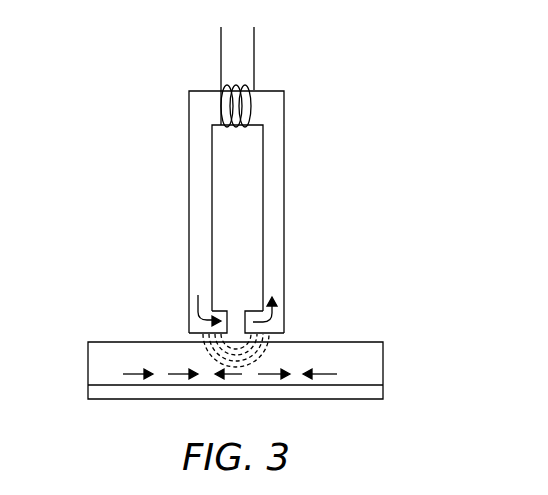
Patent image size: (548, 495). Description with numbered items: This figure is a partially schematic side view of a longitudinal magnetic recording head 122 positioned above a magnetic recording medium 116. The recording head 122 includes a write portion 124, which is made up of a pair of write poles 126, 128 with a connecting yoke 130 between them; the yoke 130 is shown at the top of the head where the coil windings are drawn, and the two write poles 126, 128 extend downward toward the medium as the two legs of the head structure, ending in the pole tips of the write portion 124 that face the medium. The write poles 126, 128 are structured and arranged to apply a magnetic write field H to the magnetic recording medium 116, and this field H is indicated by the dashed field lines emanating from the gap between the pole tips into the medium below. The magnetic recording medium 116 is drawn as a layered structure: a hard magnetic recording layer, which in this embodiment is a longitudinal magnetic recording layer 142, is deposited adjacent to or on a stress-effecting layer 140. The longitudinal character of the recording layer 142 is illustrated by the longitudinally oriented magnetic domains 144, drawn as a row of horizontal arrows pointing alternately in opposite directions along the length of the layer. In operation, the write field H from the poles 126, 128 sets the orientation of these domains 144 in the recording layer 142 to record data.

The magnetic recording medium 116 is at (419, 366).
The longitudinal magnetic recording head 122 is at (345, 138).
The write portion 124 is at (166, 315).
The write pole 126 is at (284, 181).
The write pole 128 is at (194, 222).
The connecting yoke 130 is at (267, 98).
The stress-effecting layer 140 is at (88, 392).
The longitudinal magnetic recording layer 142 is at (88, 362).
The longitudinally oriented magnetic domains 144 is at (135, 377).
The magnetic write field H is at (268, 337).